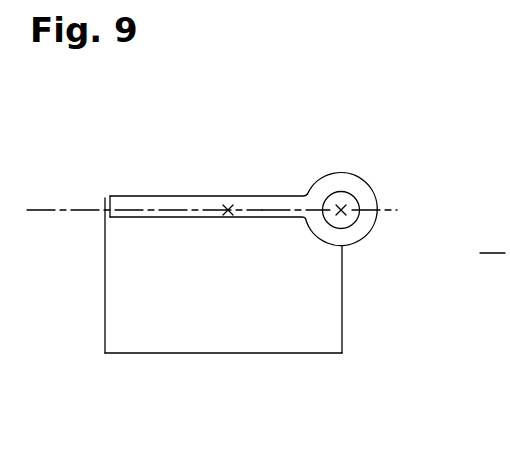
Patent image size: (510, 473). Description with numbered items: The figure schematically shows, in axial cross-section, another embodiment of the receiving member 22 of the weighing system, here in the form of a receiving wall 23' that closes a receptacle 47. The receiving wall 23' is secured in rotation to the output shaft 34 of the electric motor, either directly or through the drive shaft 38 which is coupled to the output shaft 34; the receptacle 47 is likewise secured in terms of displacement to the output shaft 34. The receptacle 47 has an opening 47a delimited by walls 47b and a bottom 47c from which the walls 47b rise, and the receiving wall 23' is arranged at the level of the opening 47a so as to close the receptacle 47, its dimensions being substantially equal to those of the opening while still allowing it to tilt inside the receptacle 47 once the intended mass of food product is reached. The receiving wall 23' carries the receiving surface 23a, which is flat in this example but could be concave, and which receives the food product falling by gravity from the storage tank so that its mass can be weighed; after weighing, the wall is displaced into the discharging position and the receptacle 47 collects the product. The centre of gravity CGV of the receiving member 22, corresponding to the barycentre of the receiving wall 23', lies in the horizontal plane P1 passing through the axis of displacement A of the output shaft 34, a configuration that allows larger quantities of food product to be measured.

The receiving member 22 is at (96, 199).
The receiving surface 23a is at (204, 155).
The receiving wall 23' is at (296, 166).
The axis of displacement A is at (343, 206).
The horizontal plane P1 is at (389, 210).
The centre of gravity CGV is at (226, 211).
The output shaft 34 is at (359, 231).
The drive shaft 38 is at (342, 185).
The receptacle 47 is at (180, 322).
The opening 47a is at (109, 196).
The walls 47b is at (105, 298).
The bottom 47c is at (280, 353).